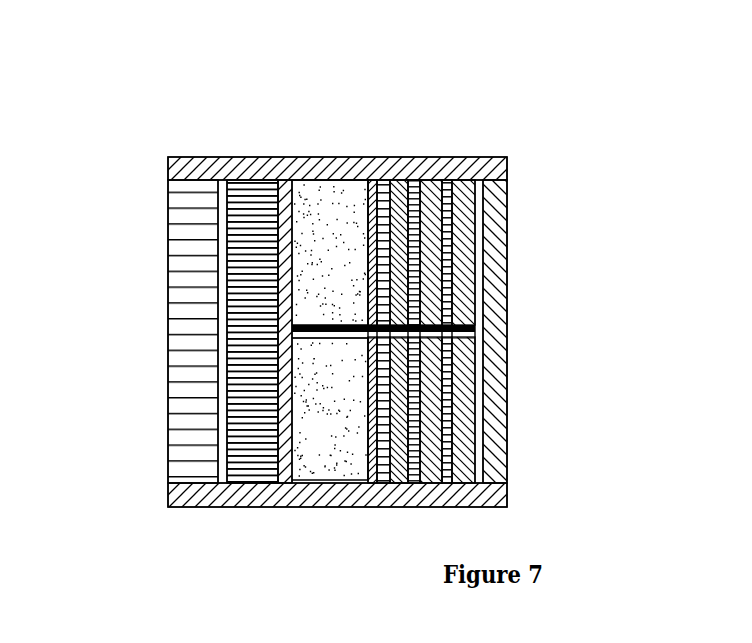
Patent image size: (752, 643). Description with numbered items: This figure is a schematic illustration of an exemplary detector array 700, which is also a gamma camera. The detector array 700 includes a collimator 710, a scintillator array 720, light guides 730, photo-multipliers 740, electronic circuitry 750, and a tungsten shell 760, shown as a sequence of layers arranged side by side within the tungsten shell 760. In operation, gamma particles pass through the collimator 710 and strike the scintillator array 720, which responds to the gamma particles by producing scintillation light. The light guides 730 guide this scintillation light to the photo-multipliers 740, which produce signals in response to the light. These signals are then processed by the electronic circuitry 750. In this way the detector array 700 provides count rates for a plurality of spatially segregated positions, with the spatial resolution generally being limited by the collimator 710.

The detector array 700 is at (540, 259).
The collimator 710 is at (193, 353).
The scintillator array 720 is at (249, 240).
The light guides 730 is at (283, 440).
The photo-multipliers 740 is at (332, 300).
The electronic circuitry 750 is at (465, 378).
The tungsten shell 760 is at (514, 167).